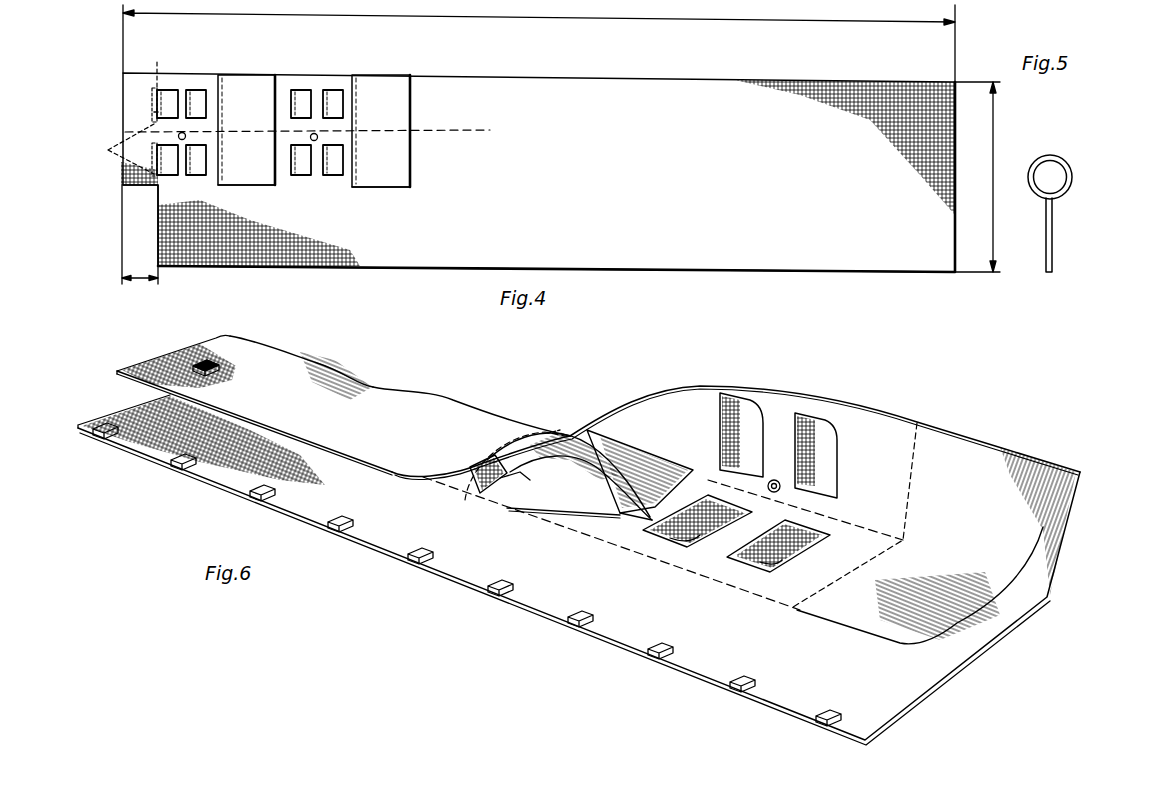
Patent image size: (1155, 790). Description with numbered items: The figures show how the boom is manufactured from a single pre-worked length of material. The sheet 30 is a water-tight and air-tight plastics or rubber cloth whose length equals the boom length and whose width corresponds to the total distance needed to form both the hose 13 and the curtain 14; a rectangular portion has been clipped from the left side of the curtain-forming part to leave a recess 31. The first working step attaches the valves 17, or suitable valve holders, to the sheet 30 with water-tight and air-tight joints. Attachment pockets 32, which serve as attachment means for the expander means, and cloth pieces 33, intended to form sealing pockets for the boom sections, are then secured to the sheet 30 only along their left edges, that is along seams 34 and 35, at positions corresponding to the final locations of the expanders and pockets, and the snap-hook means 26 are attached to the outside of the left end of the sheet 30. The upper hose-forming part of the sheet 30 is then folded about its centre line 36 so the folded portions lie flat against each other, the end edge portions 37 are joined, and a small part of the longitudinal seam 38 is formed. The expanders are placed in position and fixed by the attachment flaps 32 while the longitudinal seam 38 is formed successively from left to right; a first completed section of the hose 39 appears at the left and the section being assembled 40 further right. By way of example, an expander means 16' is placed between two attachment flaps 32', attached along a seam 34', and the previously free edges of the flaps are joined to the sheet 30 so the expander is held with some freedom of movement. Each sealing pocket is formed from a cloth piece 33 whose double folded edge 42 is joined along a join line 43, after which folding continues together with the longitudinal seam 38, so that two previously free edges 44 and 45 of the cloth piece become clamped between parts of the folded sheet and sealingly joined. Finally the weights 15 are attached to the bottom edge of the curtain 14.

In FIG. 5, the hose 13 is at (1037, 158).
In FIG. 5, the curtain 14 is at (1052, 236).
In FIG. 6, the curtain 14 is at (230, 486).
In FIG. 6, the weights 15 is at (178, 462).
In FIG. 6, the expander means 16' is at (491, 472).
In FIG. 4, the valves 17 is at (186, 136).
In FIG. 4, the snap-hook means 26 is at (112, 155).
In FIG. 6, the snap-hook means 26 is at (220, 366).
In FIG. 4, the sheet 30 is at (624, 78).
In FIG. 4, the recess 31 is at (158, 188).
In FIG. 6, the recess 31 is at (172, 397).
In FIG. 4, the attachment pockets 32 is at (250, 128).
In FIG. 6, the attachment pockets 32 is at (740, 472).
In FIG. 6, the attachment flaps 32' is at (483, 490).
In FIG. 4, the cloth pieces 33 is at (238, 88).
In FIG. 6, the cloth pieces 33 is at (645, 468).
In FIG. 4, the seam 34 is at (119, 103).
In FIG. 6, the seam 34' is at (511, 508).
In FIG. 4, the seam 35 is at (226, 168).
In FIG. 4, the centre line 36 is at (452, 130).
In FIG. 6, the centre line 36 is at (856, 532).
In FIG. 6, the end edge portions 37 is at (205, 345).
In FIG. 6, the longitudinal seam 38 is at (150, 372).
In FIG. 6, the first completed section of the hose 39 is at (300, 348).
In FIG. 6, the section being assembled 40 is at (458, 396).
In FIG. 6, the double folded edge 42 is at (632, 518).
In FIG. 6, the join line 43 is at (632, 518).
In FIG. 6, the free edge 44 is at (566, 450).
In FIG. 6, the free edge 45 is at (558, 500).